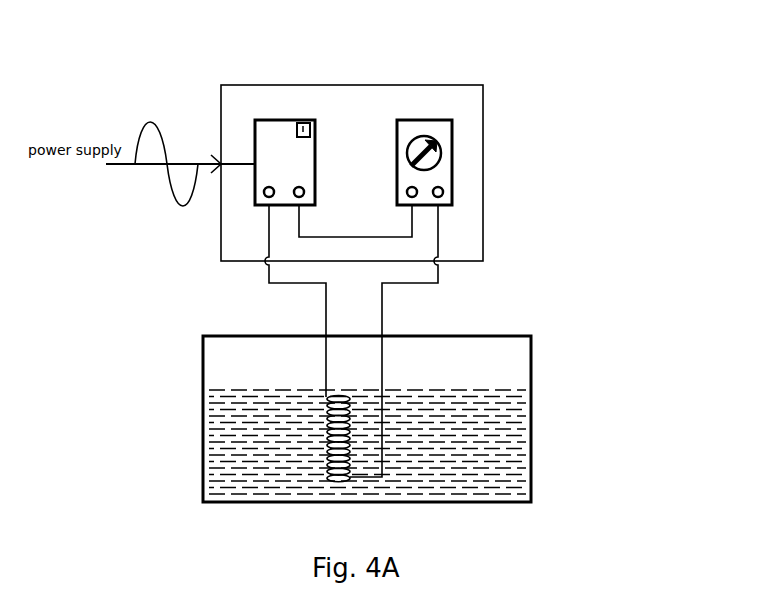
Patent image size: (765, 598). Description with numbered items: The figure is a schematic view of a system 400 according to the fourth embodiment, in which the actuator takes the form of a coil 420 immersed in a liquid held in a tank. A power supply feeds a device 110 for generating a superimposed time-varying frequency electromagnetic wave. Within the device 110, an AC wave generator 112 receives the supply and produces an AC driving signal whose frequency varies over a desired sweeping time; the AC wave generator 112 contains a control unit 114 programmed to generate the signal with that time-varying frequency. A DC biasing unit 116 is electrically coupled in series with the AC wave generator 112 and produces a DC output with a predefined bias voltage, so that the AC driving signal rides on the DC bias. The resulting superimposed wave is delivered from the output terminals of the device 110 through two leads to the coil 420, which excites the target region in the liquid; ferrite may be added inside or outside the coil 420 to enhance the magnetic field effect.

The device 110 is at (483, 157).
The alternating current (AC) wave generator 112 is at (275, 133).
The control unit 114 is at (304, 122).
The direct current (DC) biasing unit 116 is at (424, 133).
The system 400 is at (555, 313).
The coil 420 is at (327, 450).